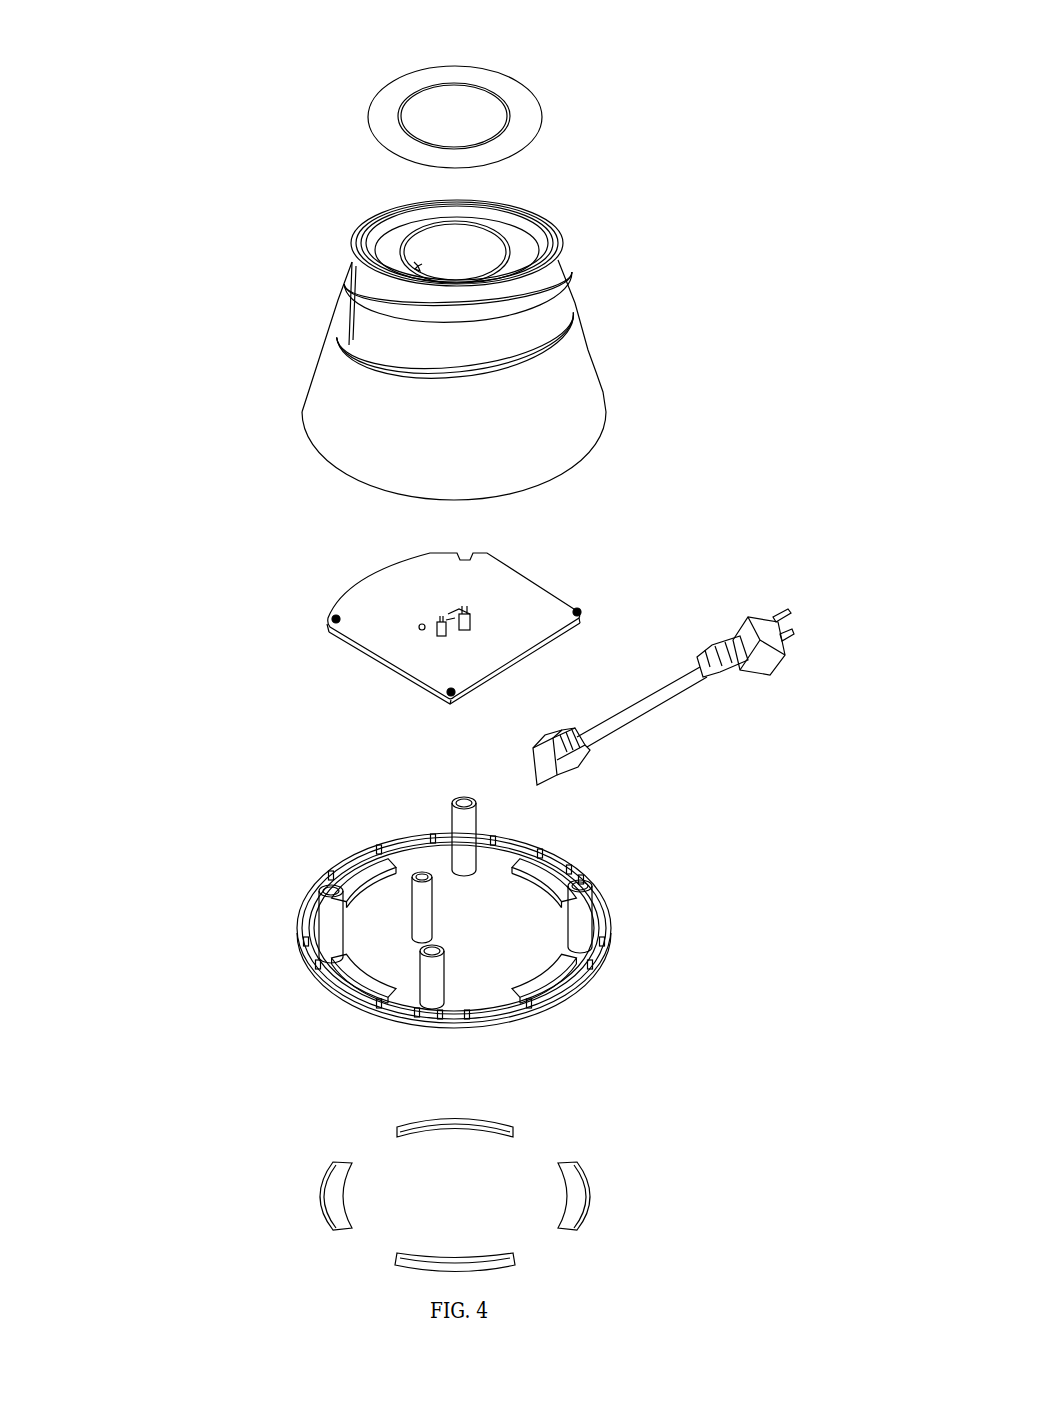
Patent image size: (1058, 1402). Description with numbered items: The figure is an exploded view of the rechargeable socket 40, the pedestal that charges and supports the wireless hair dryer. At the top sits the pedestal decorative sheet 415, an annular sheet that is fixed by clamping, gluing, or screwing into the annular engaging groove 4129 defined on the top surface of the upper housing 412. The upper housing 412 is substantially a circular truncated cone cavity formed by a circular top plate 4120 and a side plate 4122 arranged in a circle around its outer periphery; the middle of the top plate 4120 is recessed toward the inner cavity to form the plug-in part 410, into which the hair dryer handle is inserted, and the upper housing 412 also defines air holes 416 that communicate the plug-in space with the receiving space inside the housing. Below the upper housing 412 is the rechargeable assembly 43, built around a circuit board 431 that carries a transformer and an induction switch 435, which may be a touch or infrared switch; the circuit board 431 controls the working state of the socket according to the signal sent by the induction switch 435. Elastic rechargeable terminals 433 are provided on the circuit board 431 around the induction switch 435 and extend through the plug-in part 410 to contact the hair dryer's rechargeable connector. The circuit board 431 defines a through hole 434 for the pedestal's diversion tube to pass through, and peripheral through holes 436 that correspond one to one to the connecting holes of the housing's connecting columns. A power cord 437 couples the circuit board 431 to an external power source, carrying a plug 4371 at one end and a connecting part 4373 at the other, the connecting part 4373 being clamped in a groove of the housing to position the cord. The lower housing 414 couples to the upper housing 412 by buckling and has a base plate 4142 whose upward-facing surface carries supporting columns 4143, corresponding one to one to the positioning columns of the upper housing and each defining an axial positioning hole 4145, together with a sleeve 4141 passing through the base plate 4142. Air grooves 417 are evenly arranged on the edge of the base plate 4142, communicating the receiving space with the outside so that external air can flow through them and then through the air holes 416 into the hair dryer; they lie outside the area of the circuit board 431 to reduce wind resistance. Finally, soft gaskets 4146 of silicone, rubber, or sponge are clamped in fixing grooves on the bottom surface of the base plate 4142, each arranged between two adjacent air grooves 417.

The rechargeable socket 40 is at (315, 35).
The pedestal decorative sheet 415 is at (523, 118).
The upper housing 412 is at (437, 329).
The engaging groove 4129 is at (523, 233).
The top plate 4120 is at (560, 250).
The plug-in part 410 is at (427, 250).
The air holes 416 is at (414, 263).
The side plate 4122 is at (547, 388).
The rechargeable assembly 43 is at (382, 623).
The circuit board 431 is at (487, 570).
The through hole 434 is at (422, 625).
The through holes 436 is at (577, 612).
The rechargeable terminal 433 is at (437, 632).
The induction switch 435 is at (453, 636).
The power cord 437 is at (684, 678).
The plug 4371 is at (760, 623).
The connecting part 4373 is at (577, 770).
The lower housing 414 is at (430, 955).
The air grooves 417 is at (533, 1017).
The base plate 4142 is at (482, 963).
The supporting columns 4143 is at (583, 923).
The sleeve 4141 is at (421, 912).
The positioning hole 4145 is at (590, 880).
The gaskets 4146 is at (580, 1188).